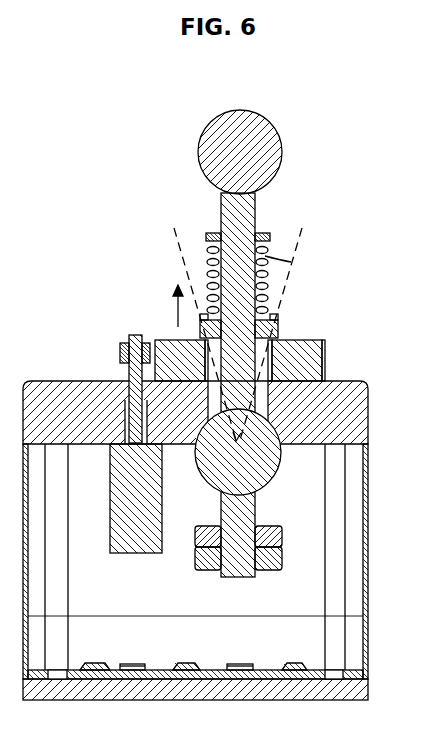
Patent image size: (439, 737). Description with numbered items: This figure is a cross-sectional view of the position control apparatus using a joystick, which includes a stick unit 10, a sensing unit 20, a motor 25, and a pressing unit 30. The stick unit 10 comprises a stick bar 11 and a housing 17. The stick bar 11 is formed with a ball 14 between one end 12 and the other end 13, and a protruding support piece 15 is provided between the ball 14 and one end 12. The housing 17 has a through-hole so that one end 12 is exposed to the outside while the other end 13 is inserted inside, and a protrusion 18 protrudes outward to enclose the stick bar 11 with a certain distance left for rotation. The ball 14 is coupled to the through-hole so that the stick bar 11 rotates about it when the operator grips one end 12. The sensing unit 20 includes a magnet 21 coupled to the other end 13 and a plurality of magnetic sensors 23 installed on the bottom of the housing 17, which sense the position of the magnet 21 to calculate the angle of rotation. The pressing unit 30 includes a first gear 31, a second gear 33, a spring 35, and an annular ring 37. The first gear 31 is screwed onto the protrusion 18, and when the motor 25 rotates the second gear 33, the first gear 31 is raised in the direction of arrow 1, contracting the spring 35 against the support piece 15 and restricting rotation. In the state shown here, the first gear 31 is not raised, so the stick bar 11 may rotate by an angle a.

The stick unit 10 is at (293, 157).
The stick bar 11 is at (245, 217).
The one end 12 is at (207, 148).
The other end 13 is at (233, 566).
The ball 14 is at (270, 466).
The support piece 15 is at (262, 238).
The housing 17 is at (345, 398).
The protrusion 18 is at (280, 340).
The sensing unit 20 is at (195, 572).
The magnet 21 is at (267, 587).
The magnetic sensors 23 is at (180, 664).
The motor 25 is at (122, 538).
The pressing unit 30 is at (293, 262).
The first gear 31 is at (163, 340).
The second gear 33 is at (120, 350).
The spring 35 is at (262, 278).
The annular ring 37 is at (262, 318).
The arrow 1 is at (187, 306).
The angle a is at (195, 266).